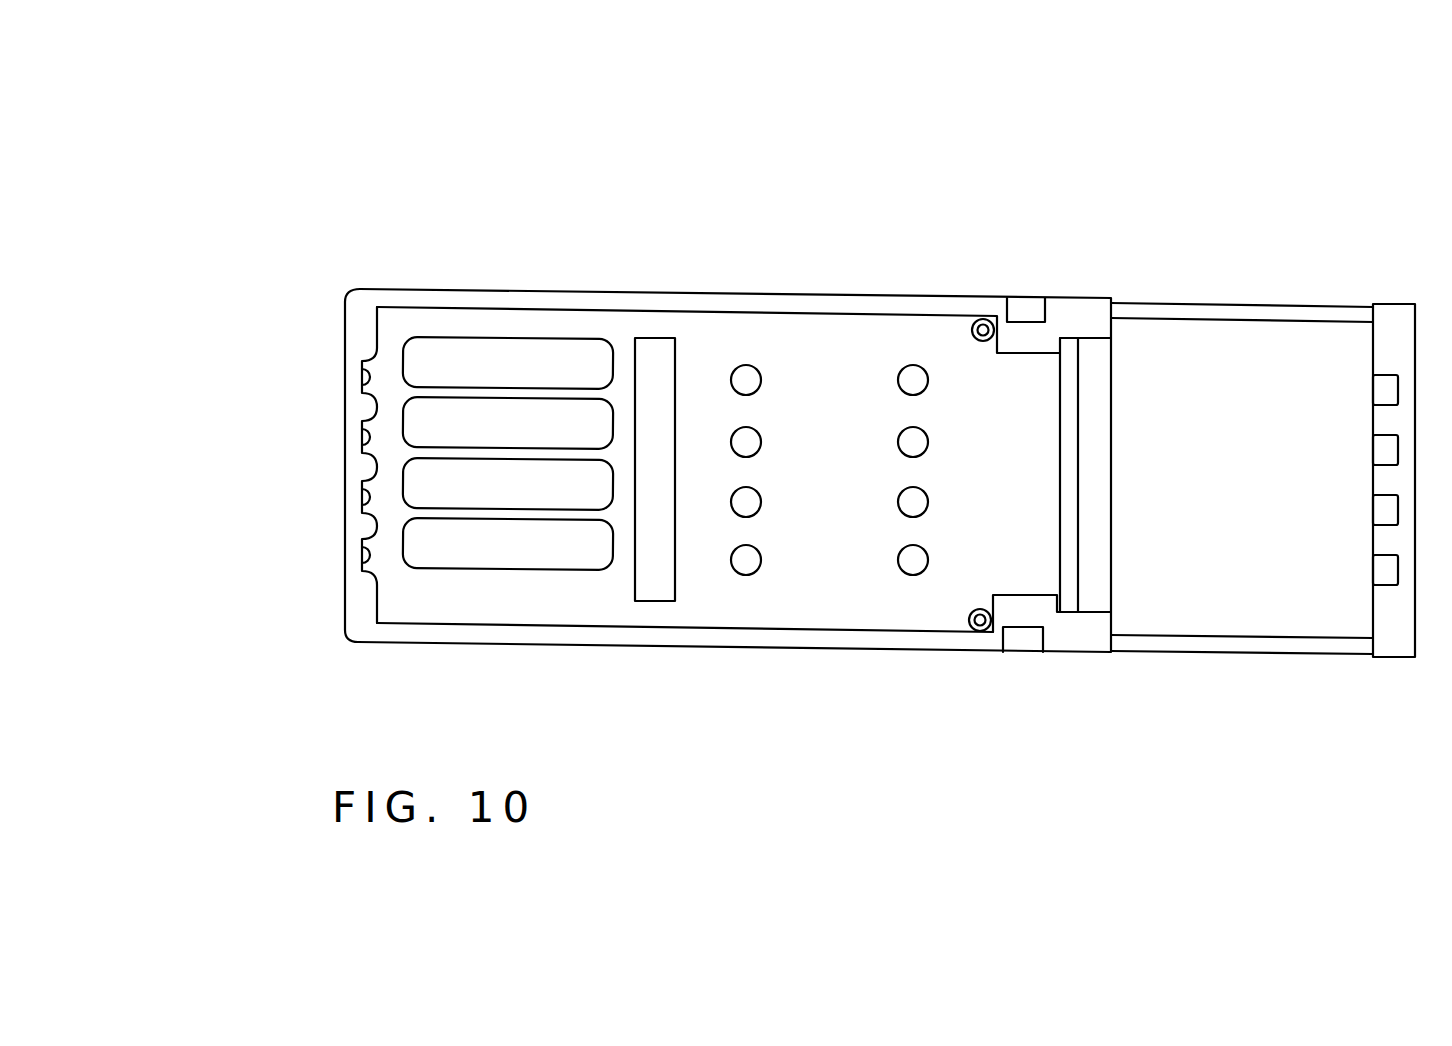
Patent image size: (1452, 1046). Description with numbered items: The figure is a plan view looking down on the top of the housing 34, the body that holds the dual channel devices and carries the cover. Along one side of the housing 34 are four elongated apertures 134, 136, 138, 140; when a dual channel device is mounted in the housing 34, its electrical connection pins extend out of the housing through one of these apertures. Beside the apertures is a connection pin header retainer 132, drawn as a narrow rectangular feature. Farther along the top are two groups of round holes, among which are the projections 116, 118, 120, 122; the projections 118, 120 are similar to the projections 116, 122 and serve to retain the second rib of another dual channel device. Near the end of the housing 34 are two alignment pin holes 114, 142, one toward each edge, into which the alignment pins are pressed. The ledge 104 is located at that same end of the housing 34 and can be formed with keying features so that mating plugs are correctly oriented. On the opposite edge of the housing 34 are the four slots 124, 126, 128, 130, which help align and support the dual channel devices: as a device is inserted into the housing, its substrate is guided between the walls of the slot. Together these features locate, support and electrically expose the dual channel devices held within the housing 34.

The housing 34 is at (627, 290).
The ledge 104 is at (1060, 435).
The alignment pin hole 114 is at (972, 606).
The projection 116 is at (922, 575).
The projection 118 is at (903, 516).
The projection 120 is at (735, 514).
The projection 122 is at (757, 573).
The slot 124 is at (360, 369).
The slot 126 is at (360, 431).
The slot 128 is at (360, 490).
The slot 130 is at (360, 554).
The connection pin header retainer 132 is at (657, 601).
The aperture 134 is at (425, 340).
The aperture 136 is at (452, 400).
The aperture 138 is at (405, 486).
The aperture 140 is at (500, 568).
The alignment pin hole 142 is at (972, 334).